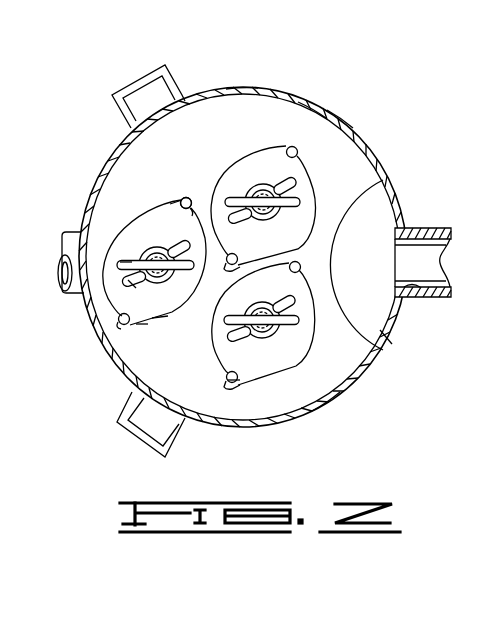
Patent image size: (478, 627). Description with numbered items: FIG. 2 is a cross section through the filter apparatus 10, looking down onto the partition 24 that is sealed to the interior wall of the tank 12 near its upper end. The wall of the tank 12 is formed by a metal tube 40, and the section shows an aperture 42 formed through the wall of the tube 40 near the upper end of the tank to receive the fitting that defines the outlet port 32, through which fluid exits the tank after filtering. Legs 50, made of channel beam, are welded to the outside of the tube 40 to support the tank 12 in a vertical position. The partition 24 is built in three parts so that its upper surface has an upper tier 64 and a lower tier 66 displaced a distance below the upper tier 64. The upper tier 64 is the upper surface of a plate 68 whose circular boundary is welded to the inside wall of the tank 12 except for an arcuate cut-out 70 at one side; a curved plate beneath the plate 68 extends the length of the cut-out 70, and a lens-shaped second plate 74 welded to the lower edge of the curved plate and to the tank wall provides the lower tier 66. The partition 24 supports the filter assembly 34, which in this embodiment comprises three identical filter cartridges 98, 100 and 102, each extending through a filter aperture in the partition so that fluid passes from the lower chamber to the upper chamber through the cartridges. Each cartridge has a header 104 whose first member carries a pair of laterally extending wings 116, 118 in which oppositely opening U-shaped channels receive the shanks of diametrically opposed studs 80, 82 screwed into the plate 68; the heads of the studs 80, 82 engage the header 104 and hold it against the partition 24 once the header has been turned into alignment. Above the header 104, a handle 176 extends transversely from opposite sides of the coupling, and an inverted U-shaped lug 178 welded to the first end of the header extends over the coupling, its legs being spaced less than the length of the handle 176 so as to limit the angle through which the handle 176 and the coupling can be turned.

The filter apparatus 10 is at (289, 72).
The tank 12 is at (238, 82).
The partition 24 is at (346, 128).
The outlet port 32 is at (424, 277).
The filter assembly 34 is at (242, 398).
The metal tube 40 is at (321, 408).
The aperture 42 is at (413, 292).
The legs 50 is at (158, 78).
The upper tier 64 is at (194, 145).
The lower tier 66 is at (376, 275).
The plate 68 is at (315, 143).
The arcuate cut-out 70 is at (378, 183).
The second plate 74 is at (392, 328).
The stud 80 is at (118, 323).
The stud 82 is at (192, 199).
The filter cartridge 98 is at (163, 316).
The filter cartridge 100 is at (268, 388).
The filter cartridge 102 is at (265, 147).
The header 104 is at (154, 328).
The wing 116 is at (148, 325).
The wing 118 is at (178, 198).
The handle 176 is at (137, 288).
The U-shaped lug 178 is at (130, 245).